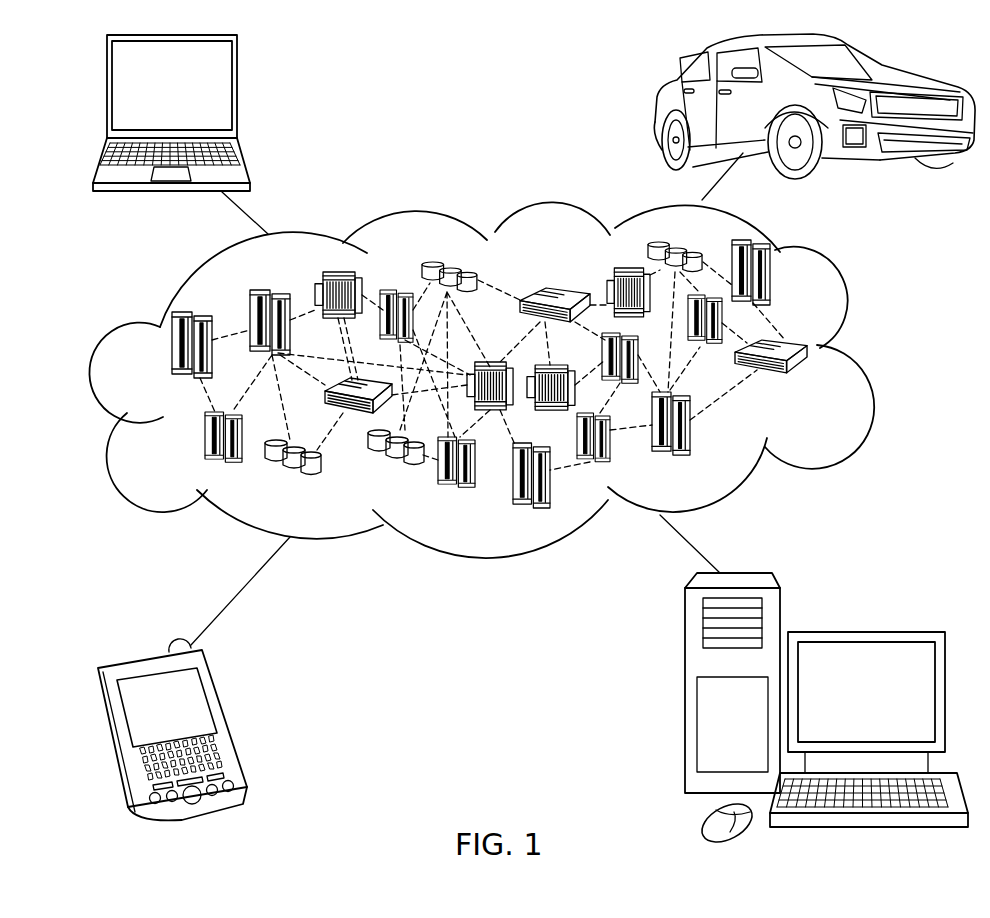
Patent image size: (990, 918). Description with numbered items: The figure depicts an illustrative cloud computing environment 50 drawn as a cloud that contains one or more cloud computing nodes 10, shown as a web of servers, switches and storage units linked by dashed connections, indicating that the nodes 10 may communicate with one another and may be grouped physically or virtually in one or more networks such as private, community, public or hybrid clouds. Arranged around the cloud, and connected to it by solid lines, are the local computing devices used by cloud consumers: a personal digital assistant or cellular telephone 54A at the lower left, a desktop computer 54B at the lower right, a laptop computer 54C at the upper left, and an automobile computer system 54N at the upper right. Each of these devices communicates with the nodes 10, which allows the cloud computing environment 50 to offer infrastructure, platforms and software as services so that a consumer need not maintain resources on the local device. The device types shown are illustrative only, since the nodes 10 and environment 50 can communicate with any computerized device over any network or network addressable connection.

The cloud computing nodes 10 is at (808, 383).
The cloud computing environment 50 is at (862, 356).
The personal digital assistant or cellular telephone 54A is at (228, 722).
The desktop computer 54B is at (862, 632).
The laptop computer 54C is at (237, 93).
The automobile computer system 54N is at (652, 107).